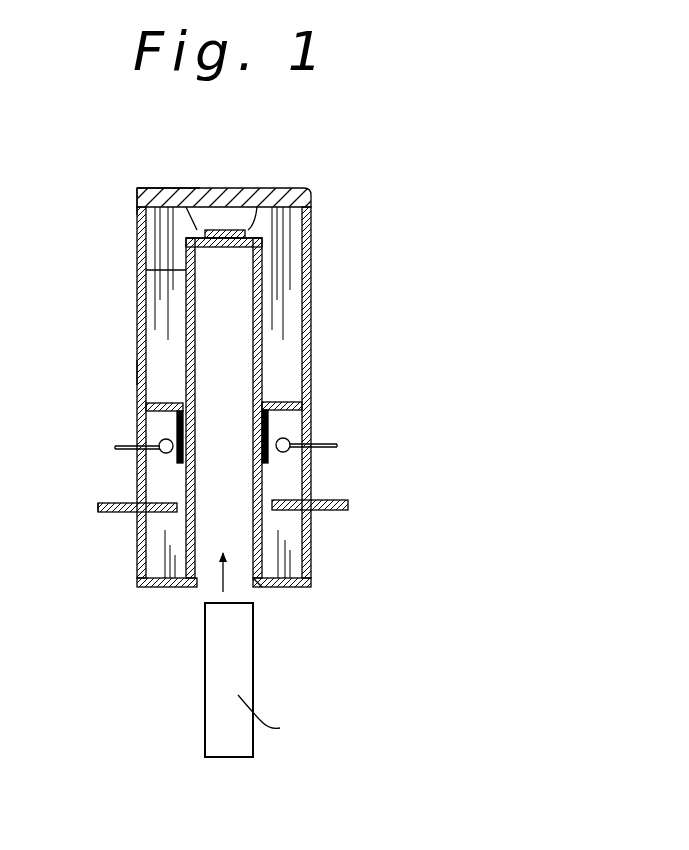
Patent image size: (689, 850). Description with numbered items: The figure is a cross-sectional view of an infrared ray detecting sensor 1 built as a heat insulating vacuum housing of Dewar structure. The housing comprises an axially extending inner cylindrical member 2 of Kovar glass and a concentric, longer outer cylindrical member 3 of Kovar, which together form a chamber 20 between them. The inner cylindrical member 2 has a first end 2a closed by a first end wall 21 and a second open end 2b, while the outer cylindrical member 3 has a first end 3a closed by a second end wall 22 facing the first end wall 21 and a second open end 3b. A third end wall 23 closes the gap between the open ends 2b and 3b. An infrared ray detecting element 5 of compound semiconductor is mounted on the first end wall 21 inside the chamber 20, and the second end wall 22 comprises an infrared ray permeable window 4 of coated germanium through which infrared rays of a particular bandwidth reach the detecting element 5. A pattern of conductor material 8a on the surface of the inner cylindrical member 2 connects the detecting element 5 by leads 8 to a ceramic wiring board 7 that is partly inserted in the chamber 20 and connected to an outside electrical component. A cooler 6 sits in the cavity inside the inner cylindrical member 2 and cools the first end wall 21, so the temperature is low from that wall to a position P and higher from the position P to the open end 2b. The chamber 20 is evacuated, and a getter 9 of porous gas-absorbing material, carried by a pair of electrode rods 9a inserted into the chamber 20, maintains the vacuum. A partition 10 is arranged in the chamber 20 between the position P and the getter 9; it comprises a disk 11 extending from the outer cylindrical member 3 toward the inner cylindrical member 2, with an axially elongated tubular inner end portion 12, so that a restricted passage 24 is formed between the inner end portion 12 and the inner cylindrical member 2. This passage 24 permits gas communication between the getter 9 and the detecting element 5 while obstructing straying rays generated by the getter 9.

The infrared ray detecting sensor 1 is at (330, 226).
The inner cylindrical member 2 is at (263, 267).
The first end of inner cylindrical member 2a is at (263, 232).
The second open end of inner cylindrical member 2b is at (258, 588).
The outer cylindrical member 3 is at (311, 320).
The first end of outer cylindrical member 3a is at (137, 195).
The second open end of outer cylindrical member 3b is at (140, 582).
The infrared ray permeable window 4 is at (292, 192).
The infrared ray detecting element 5 is at (243, 231).
The cooler 6 is at (205, 672).
The ceramic wiring board 7 is at (115, 513).
The leads 8 is at (152, 503).
The pattern of conductor material 8a is at (183, 270).
The getter 9 is at (162, 453).
The electrode rods 9a is at (115, 447).
The partition 10 is at (157, 380).
The disk 11 is at (137, 372).
The tubular inner end portion 12 is at (177, 425).
The chamber 20 is at (288, 293).
The first end wall 21 is at (197, 230).
The second end wall 22 is at (140, 193).
The third end wall 23 is at (303, 590).
The restricted passage 24 is at (253, 430).
The position P is at (199, 296).